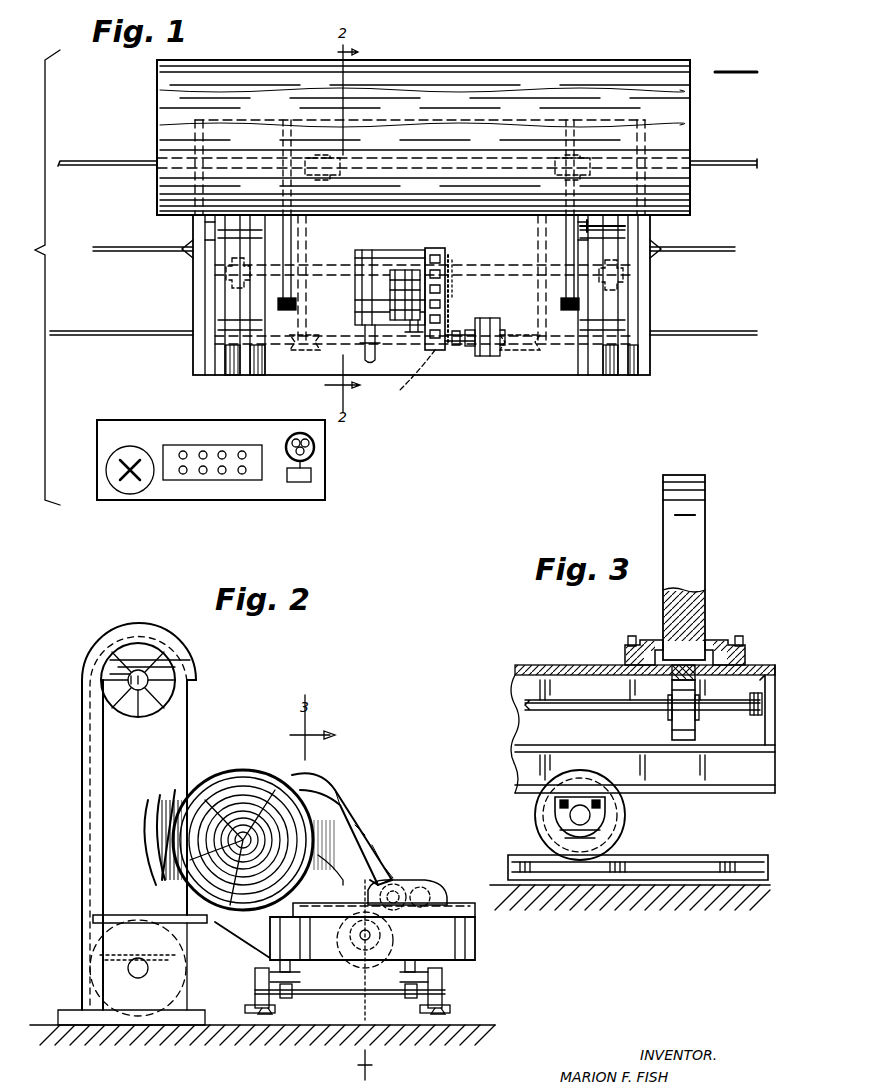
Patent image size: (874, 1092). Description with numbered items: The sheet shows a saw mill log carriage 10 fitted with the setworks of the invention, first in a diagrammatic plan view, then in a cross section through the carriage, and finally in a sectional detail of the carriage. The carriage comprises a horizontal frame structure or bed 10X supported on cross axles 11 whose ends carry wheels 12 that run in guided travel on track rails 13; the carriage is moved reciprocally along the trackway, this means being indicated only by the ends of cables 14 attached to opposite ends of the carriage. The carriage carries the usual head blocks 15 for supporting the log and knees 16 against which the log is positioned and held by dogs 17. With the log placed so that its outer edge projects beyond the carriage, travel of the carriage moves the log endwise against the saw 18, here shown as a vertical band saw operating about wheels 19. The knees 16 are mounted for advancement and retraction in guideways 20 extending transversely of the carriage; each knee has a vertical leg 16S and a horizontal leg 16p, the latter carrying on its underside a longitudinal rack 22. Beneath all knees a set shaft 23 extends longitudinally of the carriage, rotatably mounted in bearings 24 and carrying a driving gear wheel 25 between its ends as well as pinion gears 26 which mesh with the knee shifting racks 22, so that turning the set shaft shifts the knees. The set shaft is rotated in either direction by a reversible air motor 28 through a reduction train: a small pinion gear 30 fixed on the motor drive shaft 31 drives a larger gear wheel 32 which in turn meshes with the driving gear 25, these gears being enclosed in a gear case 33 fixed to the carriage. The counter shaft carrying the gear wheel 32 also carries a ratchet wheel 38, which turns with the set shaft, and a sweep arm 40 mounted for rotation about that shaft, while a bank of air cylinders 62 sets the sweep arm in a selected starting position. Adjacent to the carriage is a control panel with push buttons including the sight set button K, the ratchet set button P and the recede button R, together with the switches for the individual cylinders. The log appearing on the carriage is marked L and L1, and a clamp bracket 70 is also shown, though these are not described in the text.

In FIG. 1, the log carriage 10 is at (652, 272).
In FIG. 2, the horizontal frame structure or bed 10X is at (476, 938).
In FIG. 3, the horizontal frame structure or bed 10X is at (510, 753).
In FIG. 1, the cross axle 11 is at (308, 298).
In FIG. 2, the cross axle 11 is at (330, 995).
In FIG. 3, the cross axle 11 is at (598, 825).
In FIG. 1, the wheel 12 is at (294, 156).
In FIG. 2, the wheel 12 is at (255, 969).
In FIG. 3, the wheel 12 is at (623, 839).
In FIG. 1, the track rail 13 is at (98, 167).
In FIG. 2, the track rail 13 is at (248, 1013).
In FIG. 3, the track rail 13 is at (705, 854).
In FIG. 1, the cable 14 is at (128, 249).
In FIG. 2, the head block 15 is at (180, 898).
In FIG. 1, the knee 16 is at (210, 228).
In FIG. 2, the knee 16 is at (358, 847).
In FIG. 3, the knee 16 is at (705, 515).
In FIG. 1, the vertical leg 16S is at (616, 225).
In FIG. 2, the vertical leg 16S is at (335, 832).
In FIG. 1, the horizontal leg 16p is at (230, 322).
In FIG. 2, the horizontal leg 16p is at (368, 870).
In FIG. 1, the dog 17 is at (288, 230).
In FIG. 1, the saw 18 is at (737, 70).
In FIG. 2, the saw 18 is at (190, 718).
In FIG. 2, the wheel 19 is at (128, 710).
In FIG. 1, the guideway 20 is at (226, 306).
In FIG. 2, the guideway 20 is at (442, 889).
In FIG. 3, the guideway 20 is at (713, 638).
In FIG. 2, the longitudinal rack 22 is at (476, 920).
In FIG. 3, the longitudinal rack 22 is at (670, 680).
In FIG. 2, the set shaft 23 is at (348, 958).
In FIG. 3, the set shaft 23 is at (571, 712).
In FIG. 3, the bearing 24 is at (752, 717).
In FIG. 1, the driving gear wheel 25 is at (435, 255).
In FIG. 2, the driving gear wheel 25 is at (331, 937).
In FIG. 1, the pinion gear 26 is at (211, 282).
In FIG. 2, the pinion gear 26 is at (403, 932).
In FIG. 3, the pinion gear 26 is at (670, 733).
In FIG. 1, the reversible air motor 28 is at (500, 320).
In FIG. 1, the pinion gear 30 is at (408, 382).
In FIG. 2, the pinion gear 30 is at (433, 887).
In FIG. 1, the drive shaft 31 is at (460, 332).
In FIG. 1, the gear wheel 32 is at (456, 298).
In FIG. 2, the gear wheel 32 is at (411, 882).
In FIG. 1, the gear case 33 is at (456, 260).
In FIG. 1, the ratchet wheel 38 is at (408, 270).
In FIG. 1, the sweep arm 40 is at (418, 332).
In FIG. 2, the sweep arm 40 is at (390, 877).
In FIG. 1, the air cylinder 62 is at (360, 344).
In FIG. 1, the clamp bracket 70 is at (394, 280).
In FIG. 2, the log L is at (250, 768).
In FIG. 1, the log L1 is at (423, 137).
In FIG. 1, the ratchet set switch button P is at (325, 444).
In FIG. 1, the recede button R is at (302, 432).
In FIG. 1, the sight set button K is at (285, 454).